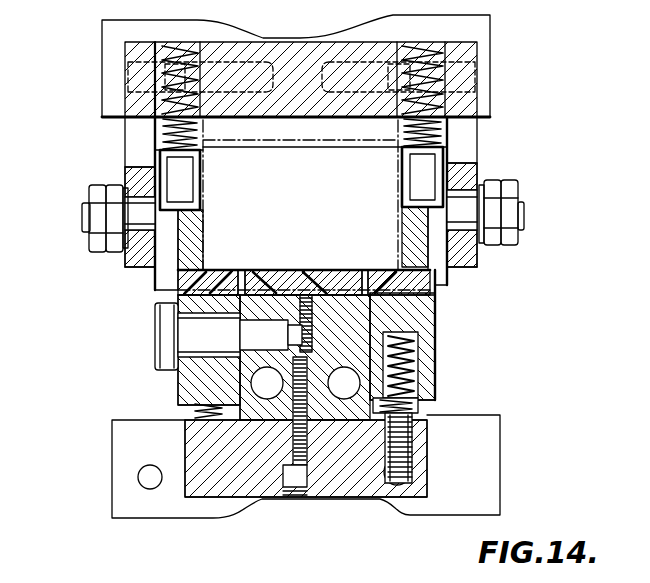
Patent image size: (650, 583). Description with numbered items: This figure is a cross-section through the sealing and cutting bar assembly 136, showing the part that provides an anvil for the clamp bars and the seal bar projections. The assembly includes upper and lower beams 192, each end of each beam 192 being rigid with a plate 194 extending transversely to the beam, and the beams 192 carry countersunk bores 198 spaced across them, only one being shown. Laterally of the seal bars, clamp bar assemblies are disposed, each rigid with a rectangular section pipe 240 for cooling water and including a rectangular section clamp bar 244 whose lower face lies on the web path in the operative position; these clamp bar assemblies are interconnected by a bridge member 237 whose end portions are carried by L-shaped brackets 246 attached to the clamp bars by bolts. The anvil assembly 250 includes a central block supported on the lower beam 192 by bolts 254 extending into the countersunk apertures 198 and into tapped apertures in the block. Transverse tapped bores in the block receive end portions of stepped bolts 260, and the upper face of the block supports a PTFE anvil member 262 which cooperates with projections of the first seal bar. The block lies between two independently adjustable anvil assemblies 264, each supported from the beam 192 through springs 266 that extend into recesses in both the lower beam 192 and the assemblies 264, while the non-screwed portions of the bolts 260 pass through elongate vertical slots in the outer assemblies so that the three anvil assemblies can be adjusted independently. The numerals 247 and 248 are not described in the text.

The sealing and cutting bar 136 is at (438, 312).
The beam 192 is at (338, 40).
The plate 194 is at (482, 85).
The countersunk bore 198 is at (292, 452).
The bridge member 237 is at (162, 276).
The rectangular section pipe 240 is at (446, 152).
The clamp bar 244 is at (447, 277).
The L-shaped bracket 246 is at (128, 130).
The clamp piece 247 is at (130, 257).
The bolt 248 is at (142, 203).
The anvil assembly 250 is at (167, 378).
The bolt 254 is at (295, 489).
The stepped bolt 260 is at (192, 338).
The PTFE anvil member 262 is at (303, 251).
The adjustable anvil assembly 264 is at (415, 317).
The spring 266 is at (408, 370).